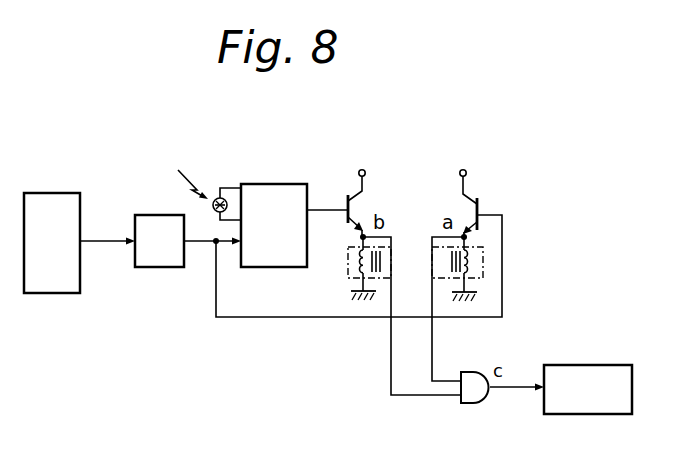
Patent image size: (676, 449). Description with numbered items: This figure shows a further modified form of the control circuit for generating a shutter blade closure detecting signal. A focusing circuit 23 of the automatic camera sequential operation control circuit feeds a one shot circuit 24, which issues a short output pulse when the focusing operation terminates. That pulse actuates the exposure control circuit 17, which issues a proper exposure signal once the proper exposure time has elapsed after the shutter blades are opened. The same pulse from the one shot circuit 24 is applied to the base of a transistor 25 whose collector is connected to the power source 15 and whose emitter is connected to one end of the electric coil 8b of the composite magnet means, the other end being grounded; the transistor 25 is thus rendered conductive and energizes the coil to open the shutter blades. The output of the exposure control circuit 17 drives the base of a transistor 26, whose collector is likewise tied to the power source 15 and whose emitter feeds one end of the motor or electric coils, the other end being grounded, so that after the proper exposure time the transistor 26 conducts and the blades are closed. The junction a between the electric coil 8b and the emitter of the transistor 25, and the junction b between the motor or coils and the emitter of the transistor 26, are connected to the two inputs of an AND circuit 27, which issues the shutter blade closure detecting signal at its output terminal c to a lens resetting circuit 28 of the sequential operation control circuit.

The focusing circuit 23 is at (52, 243).
The one shot circuit 24 is at (159, 241).
The exposure control circuit 17 is at (242, 218).
The transistor 26 is at (346, 197).
The power source 15 is at (366, 170).
The transistor 25 is at (483, 208).
The electric coil 8b is at (470, 263).
The AND circuit 27 is at (471, 405).
The lens resetting circuit 28 is at (588, 389).